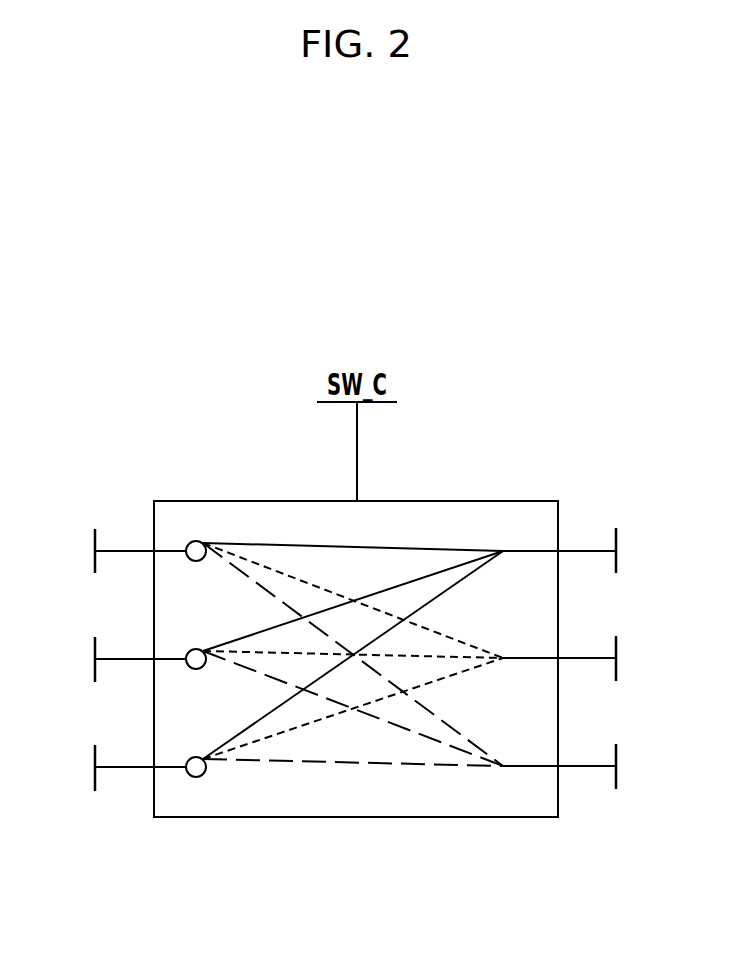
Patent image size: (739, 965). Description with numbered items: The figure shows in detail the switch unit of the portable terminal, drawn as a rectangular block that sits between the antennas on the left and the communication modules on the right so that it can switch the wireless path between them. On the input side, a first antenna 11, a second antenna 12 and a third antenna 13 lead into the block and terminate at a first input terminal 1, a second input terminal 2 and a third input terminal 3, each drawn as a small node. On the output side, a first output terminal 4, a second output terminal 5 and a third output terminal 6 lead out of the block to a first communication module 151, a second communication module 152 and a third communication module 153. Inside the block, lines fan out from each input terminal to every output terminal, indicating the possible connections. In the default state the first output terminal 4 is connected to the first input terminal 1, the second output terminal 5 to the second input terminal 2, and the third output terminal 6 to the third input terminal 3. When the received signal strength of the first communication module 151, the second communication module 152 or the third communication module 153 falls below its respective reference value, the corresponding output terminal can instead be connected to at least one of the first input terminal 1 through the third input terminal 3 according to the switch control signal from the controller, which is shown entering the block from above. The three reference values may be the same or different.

The first input terminal 1 is at (192, 543).
The second input terminal 2 is at (192, 651).
The third input terminal 3 is at (192, 759).
The first output terminal 4 is at (586, 550).
The second output terminal 5 is at (584, 657).
The third output terminal 6 is at (584, 765).
The first antenna 11 is at (121, 551).
The second antenna 12 is at (121, 659).
The third antenna 13 is at (121, 768).
The first communication module 151 is at (585, 550).
The second communication module 152 is at (585, 658).
The third communication module 153 is at (585, 766).